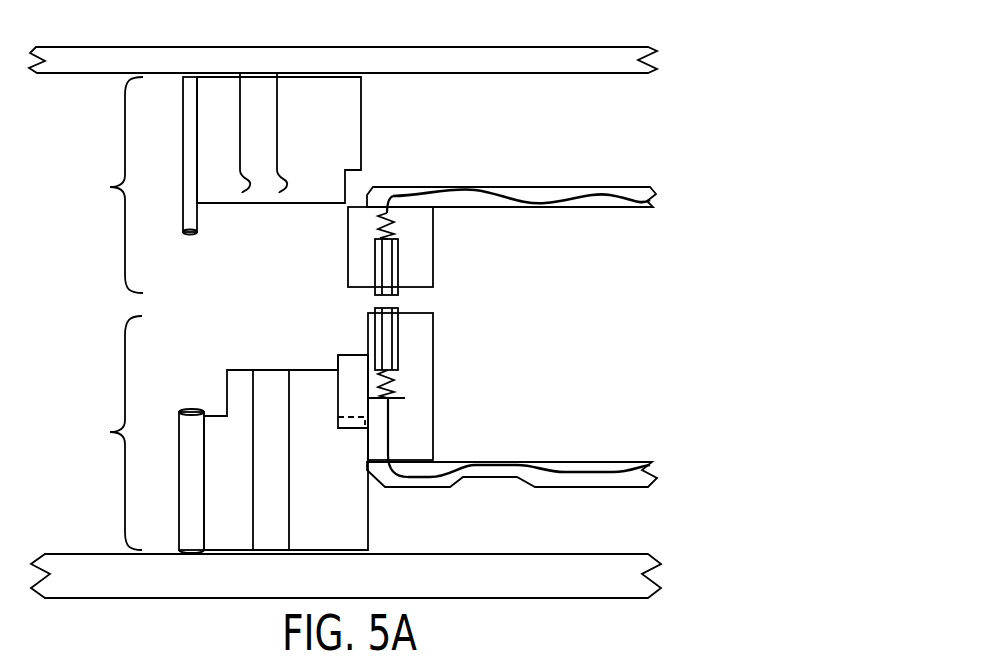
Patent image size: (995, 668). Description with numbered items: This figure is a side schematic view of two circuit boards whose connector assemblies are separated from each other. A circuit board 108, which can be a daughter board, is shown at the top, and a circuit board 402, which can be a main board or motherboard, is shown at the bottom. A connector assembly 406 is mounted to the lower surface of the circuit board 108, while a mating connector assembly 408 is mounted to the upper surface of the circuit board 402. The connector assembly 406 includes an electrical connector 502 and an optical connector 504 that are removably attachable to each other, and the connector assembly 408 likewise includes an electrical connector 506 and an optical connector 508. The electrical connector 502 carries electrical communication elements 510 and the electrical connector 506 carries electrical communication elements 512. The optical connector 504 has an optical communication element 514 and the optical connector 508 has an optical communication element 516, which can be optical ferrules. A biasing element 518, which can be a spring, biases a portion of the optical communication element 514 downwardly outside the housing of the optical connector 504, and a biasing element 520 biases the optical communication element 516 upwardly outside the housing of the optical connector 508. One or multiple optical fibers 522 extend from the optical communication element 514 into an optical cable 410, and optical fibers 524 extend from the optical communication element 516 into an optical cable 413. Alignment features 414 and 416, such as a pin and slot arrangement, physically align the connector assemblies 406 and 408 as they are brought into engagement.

The circuit board 108 is at (432, 55).
The circuit board 402 is at (68, 553).
The connector assembly 406 is at (102, 185).
The connector assembly 408 is at (102, 433).
The optical cable 410 is at (612, 187).
The optical cable 413 is at (590, 488).
The alignment feature 414 is at (182, 213).
The alignment feature 416 is at (179, 416).
The electrical connector 502 is at (361, 125).
The optical connector 504 is at (433, 247).
The electrical connector 506 is at (368, 520).
The optical connector 508 is at (433, 387).
The electrical communication elements 510 is at (277, 120).
The electrical communication elements 512 is at (289, 392).
The optical communication element 514 is at (398, 292).
The optical communication element 516 is at (398, 343).
The biasing element 518 is at (393, 217).
The biasing element 520 is at (392, 380).
The optical fibers 522 is at (456, 193).
The optical fibers 524 is at (566, 468).